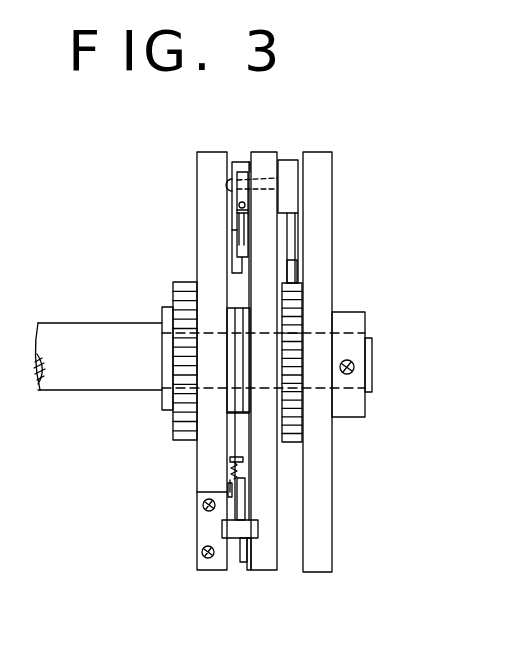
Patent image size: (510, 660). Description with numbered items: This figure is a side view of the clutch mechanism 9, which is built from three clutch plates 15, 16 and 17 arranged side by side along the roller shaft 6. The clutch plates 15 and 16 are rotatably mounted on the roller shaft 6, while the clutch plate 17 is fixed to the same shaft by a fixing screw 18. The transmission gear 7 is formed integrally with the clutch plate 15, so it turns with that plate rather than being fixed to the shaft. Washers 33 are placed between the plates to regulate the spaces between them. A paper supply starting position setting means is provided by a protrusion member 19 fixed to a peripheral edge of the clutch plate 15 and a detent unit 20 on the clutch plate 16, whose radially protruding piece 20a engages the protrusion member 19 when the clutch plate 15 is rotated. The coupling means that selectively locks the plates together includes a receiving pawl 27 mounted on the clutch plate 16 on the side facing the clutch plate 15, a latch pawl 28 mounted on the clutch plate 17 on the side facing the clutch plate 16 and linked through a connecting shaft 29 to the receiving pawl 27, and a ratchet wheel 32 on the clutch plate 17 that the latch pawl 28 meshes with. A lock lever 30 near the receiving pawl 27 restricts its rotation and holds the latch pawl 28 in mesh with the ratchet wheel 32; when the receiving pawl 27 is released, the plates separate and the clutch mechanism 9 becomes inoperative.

The roller shaft 6 is at (77, 337).
The transmission gear 7 is at (175, 287).
The clutch mechanism 9 is at (343, 190).
The clutch plate 15 is at (208, 153).
The clutch plate 16 is at (273, 153).
The clutch plate 17 is at (318, 155).
The fixing screw 18 is at (355, 361).
The protrusion member 19 is at (257, 526).
The detent unit 20 is at (232, 268).
The radially protruding piece 20a is at (228, 527).
The receiving pawl 27 is at (242, 165).
The latch pawl 28 is at (293, 235).
The connecting shaft 29 is at (264, 177).
The lock lever 30 is at (238, 243).
The ratchet wheel 32 is at (293, 297).
The washers 33 is at (226, 420).